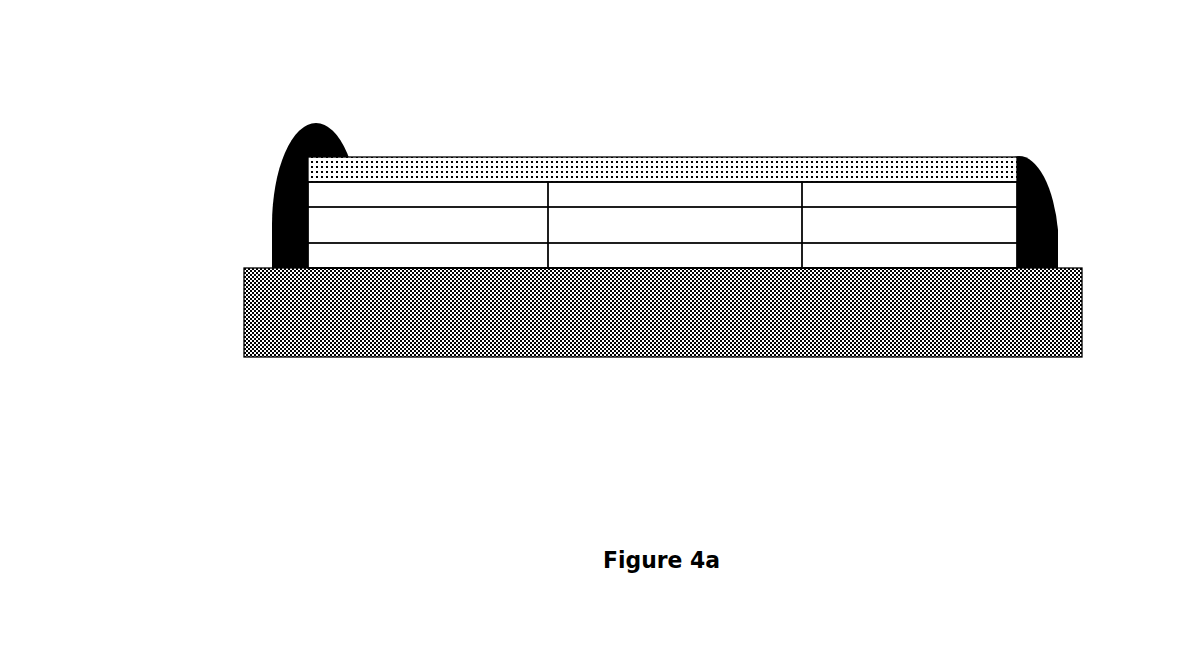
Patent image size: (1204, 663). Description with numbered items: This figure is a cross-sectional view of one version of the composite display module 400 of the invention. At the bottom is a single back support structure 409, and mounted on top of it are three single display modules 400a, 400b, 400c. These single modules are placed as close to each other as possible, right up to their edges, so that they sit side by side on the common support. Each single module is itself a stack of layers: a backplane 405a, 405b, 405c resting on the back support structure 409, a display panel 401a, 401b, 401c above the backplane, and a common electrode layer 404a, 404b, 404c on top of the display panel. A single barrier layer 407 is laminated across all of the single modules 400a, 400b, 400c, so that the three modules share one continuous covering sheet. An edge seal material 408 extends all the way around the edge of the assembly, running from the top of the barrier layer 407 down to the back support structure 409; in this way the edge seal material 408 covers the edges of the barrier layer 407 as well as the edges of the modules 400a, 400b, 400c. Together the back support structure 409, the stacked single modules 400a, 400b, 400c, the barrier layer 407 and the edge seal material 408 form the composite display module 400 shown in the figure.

The composite display module 400 is at (1120, 185).
The single display module 400a is at (383, 282).
The single display module 400b is at (613, 282).
The single display module 400c is at (840, 282).
The display panel 401a is at (428, 225).
The display panel 401b is at (675, 225).
The display panel 401c is at (909, 225).
The common electrode layer 404a is at (459, 183).
The common electrode layer 404b is at (713, 183).
The common electrode layer 404c is at (917, 183).
The backplane 405a is at (486, 266).
The backplane 405b is at (726, 266).
The backplane 405c is at (942, 266).
The barrier layer 407 is at (628, 153).
The edge seal material 408 is at (285, 128).
The back support structure 409 is at (234, 307).